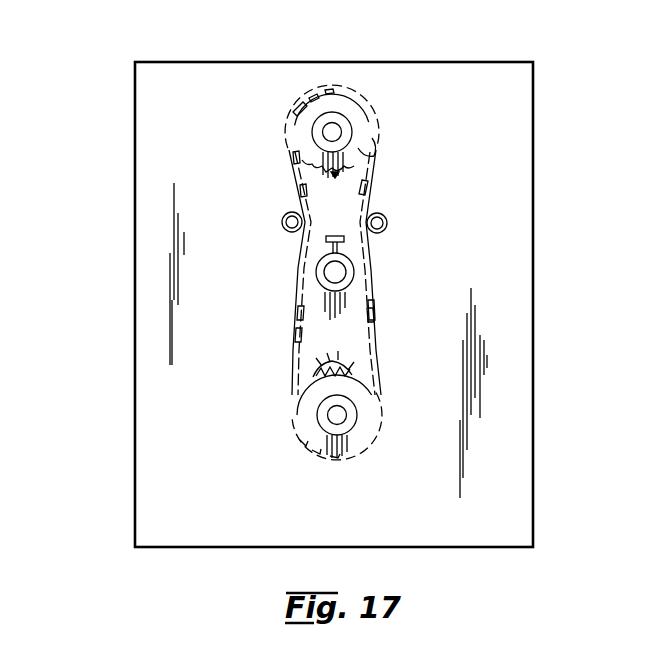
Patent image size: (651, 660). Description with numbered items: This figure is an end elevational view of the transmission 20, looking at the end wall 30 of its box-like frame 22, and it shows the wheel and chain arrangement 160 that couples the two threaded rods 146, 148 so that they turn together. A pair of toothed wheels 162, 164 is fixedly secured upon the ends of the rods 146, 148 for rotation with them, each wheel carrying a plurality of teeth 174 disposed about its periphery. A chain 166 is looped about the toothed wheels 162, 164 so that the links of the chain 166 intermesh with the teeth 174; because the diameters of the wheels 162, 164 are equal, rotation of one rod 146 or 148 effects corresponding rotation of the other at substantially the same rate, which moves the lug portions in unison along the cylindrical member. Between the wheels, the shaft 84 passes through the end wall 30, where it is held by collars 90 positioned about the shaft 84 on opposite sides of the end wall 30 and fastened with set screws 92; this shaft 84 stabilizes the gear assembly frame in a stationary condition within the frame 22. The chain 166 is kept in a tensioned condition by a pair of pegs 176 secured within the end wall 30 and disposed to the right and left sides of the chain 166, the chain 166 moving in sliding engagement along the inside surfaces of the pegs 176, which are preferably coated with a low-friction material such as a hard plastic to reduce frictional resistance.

The transmission 20 is at (520, 56).
The frame 22 is at (142, 281).
The end wall 30 is at (515, 293).
The shaft 84 is at (346, 272).
The collars 90 is at (316, 272).
The set screws 92 is at (336, 236).
The threaded rod 146 is at (322, 131).
The threaded rod 148 is at (318, 413).
The wheel and chain arrangement 160 is at (337, 80).
The toothed wheel 162 is at (366, 130).
The toothed wheel 164 is at (370, 409).
The chain 166 is at (373, 322).
The teeth 174 is at (364, 190).
The pegs 176 is at (282, 222).